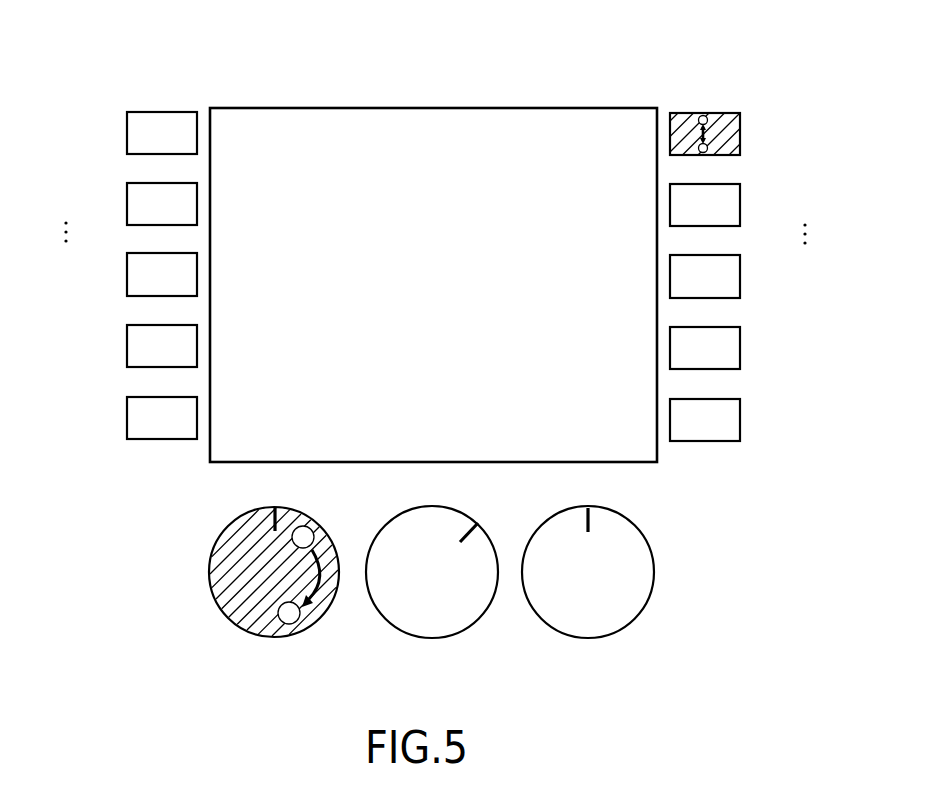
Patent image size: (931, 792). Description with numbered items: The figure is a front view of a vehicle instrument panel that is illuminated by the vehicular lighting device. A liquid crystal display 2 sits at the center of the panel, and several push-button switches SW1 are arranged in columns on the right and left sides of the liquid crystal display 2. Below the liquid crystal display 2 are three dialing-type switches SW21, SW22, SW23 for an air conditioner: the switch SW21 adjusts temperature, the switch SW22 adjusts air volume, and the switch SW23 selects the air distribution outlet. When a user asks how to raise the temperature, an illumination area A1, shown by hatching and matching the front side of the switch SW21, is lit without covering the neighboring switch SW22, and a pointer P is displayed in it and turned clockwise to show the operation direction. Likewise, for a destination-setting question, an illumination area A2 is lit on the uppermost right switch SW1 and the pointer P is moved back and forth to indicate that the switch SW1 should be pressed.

The liquid crystal display 2 is at (509, 108).
The switches SW1 is at (127, 131).
The illumination area A2 is at (704, 116).
The switch SW21 is at (273, 638).
The switch SW22 is at (428, 638).
The switch SW23 is at (584, 638).
The illumination area A1 is at (223, 541).
The pointer P is at (311, 530).